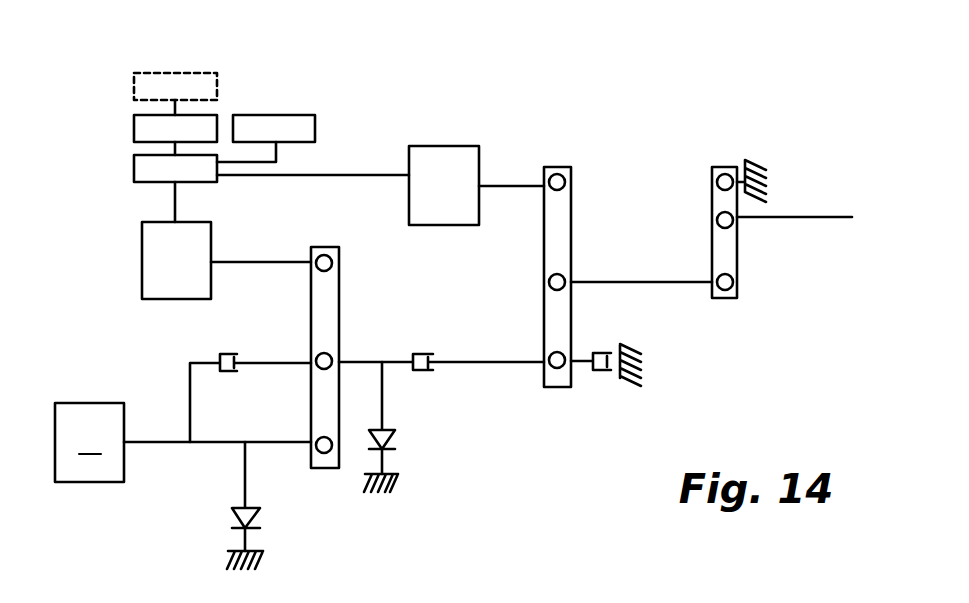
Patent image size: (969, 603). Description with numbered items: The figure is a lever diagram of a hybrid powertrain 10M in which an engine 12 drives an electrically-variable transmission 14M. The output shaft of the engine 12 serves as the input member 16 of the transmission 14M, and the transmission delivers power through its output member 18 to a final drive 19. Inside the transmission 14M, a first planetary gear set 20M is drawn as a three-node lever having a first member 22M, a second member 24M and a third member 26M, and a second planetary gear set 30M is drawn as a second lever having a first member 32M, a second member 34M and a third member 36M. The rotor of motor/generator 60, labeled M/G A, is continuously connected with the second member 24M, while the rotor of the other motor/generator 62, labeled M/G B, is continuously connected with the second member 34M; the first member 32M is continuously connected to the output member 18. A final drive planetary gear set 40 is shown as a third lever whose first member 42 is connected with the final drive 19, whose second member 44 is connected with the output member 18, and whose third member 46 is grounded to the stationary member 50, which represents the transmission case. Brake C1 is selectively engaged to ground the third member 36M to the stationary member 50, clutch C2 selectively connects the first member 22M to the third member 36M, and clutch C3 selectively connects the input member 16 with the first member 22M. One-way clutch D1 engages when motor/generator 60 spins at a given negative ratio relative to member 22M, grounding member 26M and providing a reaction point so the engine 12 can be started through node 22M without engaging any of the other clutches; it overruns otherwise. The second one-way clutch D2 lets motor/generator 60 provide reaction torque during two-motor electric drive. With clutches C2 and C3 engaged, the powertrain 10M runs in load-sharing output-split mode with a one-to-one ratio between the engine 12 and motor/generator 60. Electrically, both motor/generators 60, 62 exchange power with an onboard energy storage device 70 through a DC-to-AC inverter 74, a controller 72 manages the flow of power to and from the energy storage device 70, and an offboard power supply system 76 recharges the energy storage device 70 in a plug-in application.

The powertrain 10M is at (808, 175).
The engine 12 is at (89, 442).
The transmission 14M is at (84, 240).
The input member 16 is at (176, 445).
The output member 18 is at (655, 283).
The final drive 19 is at (817, 220).
The first planetary gear set 20M is at (340, 290).
The first member 22M is at (326, 455).
The second member 24M is at (322, 255).
The third member 26M is at (314, 356).
The second planetary gear set 30M is at (572, 200).
The first member 32M is at (565, 280).
The second member 34M is at (556, 174).
The third member 36M is at (556, 370).
The planetary gear set 40 is at (712, 205).
The first member 42 is at (733, 226).
The second member 44 is at (733, 288).
The third member 46 is at (722, 175).
The stationary member 50 is at (263, 562).
The motor/generator 60 is at (158, 300).
The motor/generator 62 is at (441, 146).
The energy storage device 70 is at (134, 115).
The controller 72 is at (275, 115).
The power inverter 74 is at (134, 156).
The offboard power supply system 76 is at (172, 70).
The brake C1 is at (599, 336).
The clutch C2 is at (427, 383).
The clutch C3 is at (231, 384).
The one-way clutch D1 is at (413, 440).
The one-way clutch D2 is at (220, 522).